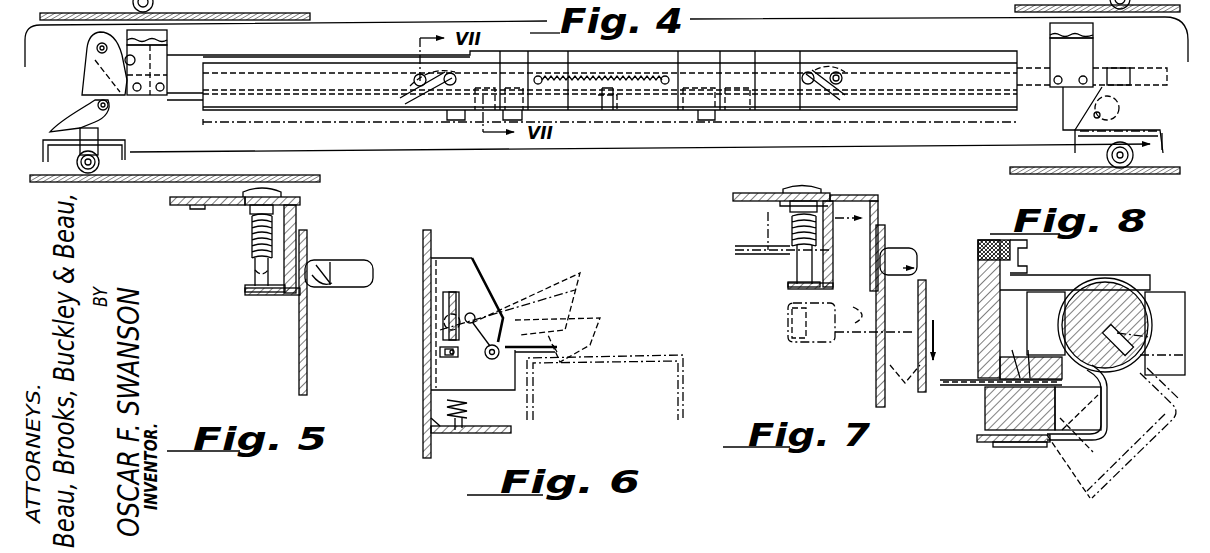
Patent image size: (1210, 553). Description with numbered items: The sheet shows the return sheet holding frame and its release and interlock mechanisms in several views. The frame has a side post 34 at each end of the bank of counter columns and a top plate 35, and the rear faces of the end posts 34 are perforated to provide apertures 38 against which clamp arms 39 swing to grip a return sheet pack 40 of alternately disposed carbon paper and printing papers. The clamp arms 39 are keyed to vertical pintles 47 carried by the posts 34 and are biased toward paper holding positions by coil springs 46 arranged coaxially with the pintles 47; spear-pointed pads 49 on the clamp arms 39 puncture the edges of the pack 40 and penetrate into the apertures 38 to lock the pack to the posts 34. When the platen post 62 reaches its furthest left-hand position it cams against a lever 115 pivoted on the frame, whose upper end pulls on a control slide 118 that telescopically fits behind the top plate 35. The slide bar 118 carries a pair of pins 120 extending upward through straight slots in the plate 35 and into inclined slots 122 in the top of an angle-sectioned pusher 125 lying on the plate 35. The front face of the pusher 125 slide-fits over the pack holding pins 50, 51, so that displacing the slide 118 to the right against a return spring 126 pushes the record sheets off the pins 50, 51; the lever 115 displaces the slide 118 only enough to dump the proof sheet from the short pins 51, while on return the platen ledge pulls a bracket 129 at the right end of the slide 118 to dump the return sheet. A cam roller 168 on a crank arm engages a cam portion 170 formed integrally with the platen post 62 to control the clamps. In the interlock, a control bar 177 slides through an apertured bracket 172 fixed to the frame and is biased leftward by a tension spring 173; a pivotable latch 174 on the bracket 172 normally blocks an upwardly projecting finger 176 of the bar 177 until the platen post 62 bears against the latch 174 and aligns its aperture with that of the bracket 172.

In FIG. 4, the side post 34 is at (167, 37).
In FIG. 8, the side post 34 is at (978, 300).
In FIG. 4, the top plate 35 is at (185, 62).
In FIG. 5, the top plate 35 is at (204, 210).
In FIG. 7, the top plate 35 is at (740, 195).
In FIG. 8, the apertures 38 is at (1000, 370).
In FIG. 8, the clamp arms 39 is at (1050, 446).
In FIG. 5, the return sheet pack 40 is at (309, 376).
In FIG. 7, the return sheet pack 40 is at (888, 380).
In FIG. 8, the return sheet pack 40 is at (965, 384).
In FIG. 8, the coil springs 46 is at (1133, 290).
In FIG. 8, the pintles 47 is at (1103, 296).
In FIG. 8, the spear-pointed pads 49 is at (1012, 350).
In FIG. 4, the pack holding pins 50 is at (455, 120).
In FIG. 5, the pack holding pins 50 is at (312, 268).
In FIG. 7, the pack holding pins 50 is at (905, 277).
In FIG. 4, the short pins 51 is at (608, 113).
In FIG. 5, the short pins 51 is at (335, 275).
In FIG. 7, the short pins 51 is at (858, 270).
In FIG. 4, the platen post 62 is at (130, 145).
In FIG. 6, the platen post 62 is at (665, 354).
In FIG. 4, the lever 115 is at (78, 118).
In FIG. 4, the control slide 118 is at (80, 86).
In FIG. 5, the control slide 118 is at (243, 214).
In FIG. 7, the control slide 118 is at (782, 207).
In FIG. 4, the pins 120 is at (415, 72).
In FIG. 5, the pins 120 is at (280, 193).
In FIG. 7, the pins 120 is at (805, 188).
In FIG. 4, the inclined slots 122 is at (832, 63).
In FIG. 4, the pusher 125 is at (952, 57).
In FIG. 5, the pusher 125 is at (174, 203).
In FIG. 7, the pusher 125 is at (858, 194).
In FIG. 5, the return spring 126 is at (252, 246).
In FIG. 7, the return spring 126 is at (790, 228).
In FIG. 4, the bracket 129 is at (1110, 118).
In FIG. 4, the cam roller 168 is at (1120, 93).
In FIG. 4, the cam portion 170 is at (90, 133).
In FIG. 6, the apertured bracket 172 is at (462, 258).
In FIG. 6, the tension spring 173 is at (468, 408).
In FIG. 6, the latch 174 is at (545, 282).
In FIG. 6, the finger 176 is at (440, 352).
In FIG. 6, the control bar 177 is at (462, 333).